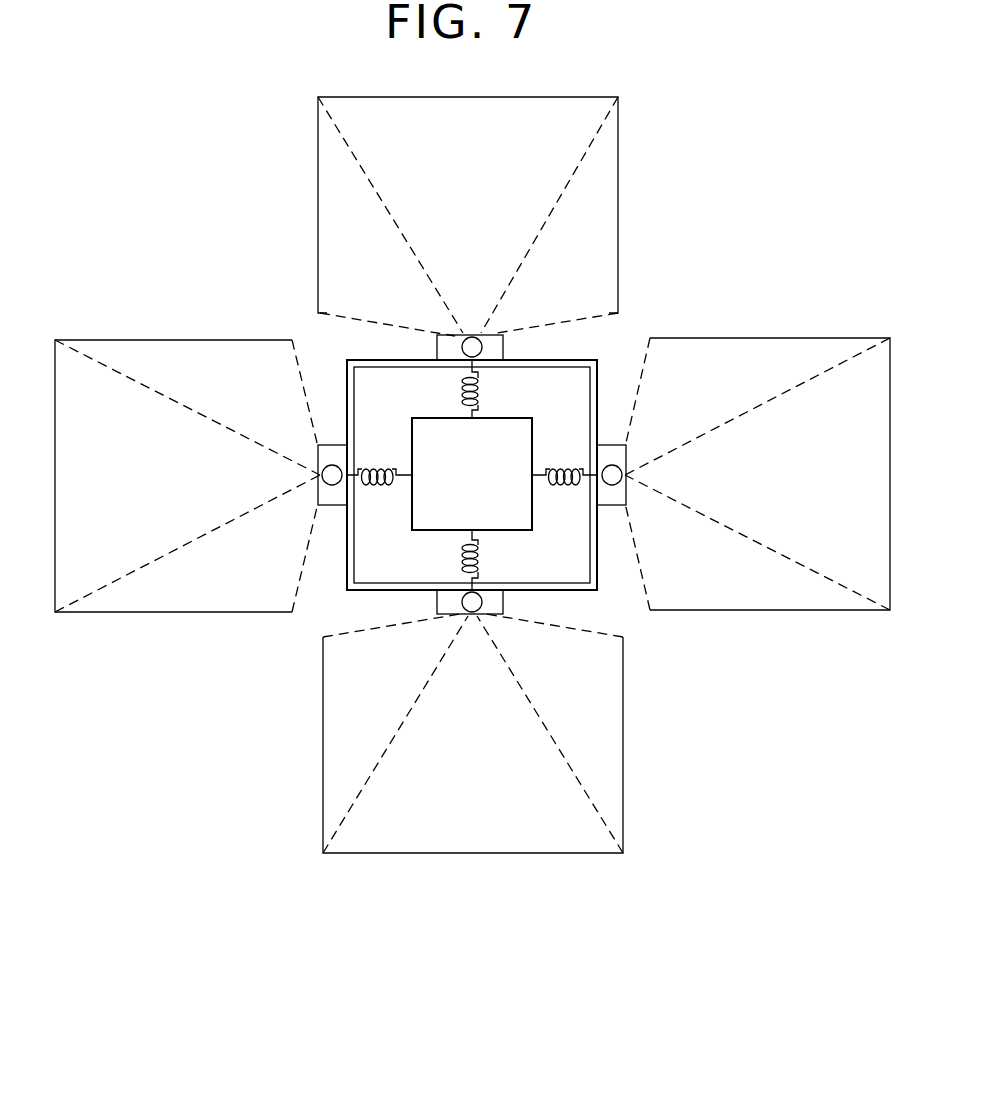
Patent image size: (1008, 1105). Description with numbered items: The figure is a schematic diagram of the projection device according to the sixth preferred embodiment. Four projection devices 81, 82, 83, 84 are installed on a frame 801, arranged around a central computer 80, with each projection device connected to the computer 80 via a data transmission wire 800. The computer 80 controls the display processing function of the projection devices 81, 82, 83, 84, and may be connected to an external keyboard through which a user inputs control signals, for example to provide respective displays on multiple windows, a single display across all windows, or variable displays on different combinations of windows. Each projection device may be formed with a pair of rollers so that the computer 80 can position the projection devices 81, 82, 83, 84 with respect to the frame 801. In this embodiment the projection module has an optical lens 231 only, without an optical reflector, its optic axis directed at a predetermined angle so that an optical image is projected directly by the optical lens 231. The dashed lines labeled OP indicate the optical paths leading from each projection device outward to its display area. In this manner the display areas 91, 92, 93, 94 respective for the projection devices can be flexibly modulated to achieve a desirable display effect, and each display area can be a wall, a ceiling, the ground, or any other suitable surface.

The computer 80 is at (432, 512).
The data transmission wire 800 is at (462, 390).
The frame 801 is at (590, 358).
The projection device 81 is at (493, 604).
The projection device 82 is at (613, 505).
The projection device 83 is at (333, 445).
The projection device 84 is at (492, 352).
The optical lens 231 is at (497, 333).
The display area 91 is at (890, 366).
The display area 92 is at (623, 772).
The display area 93 is at (207, 612).
The display area 94 is at (618, 140).
The optical path OP is at (395, 228).